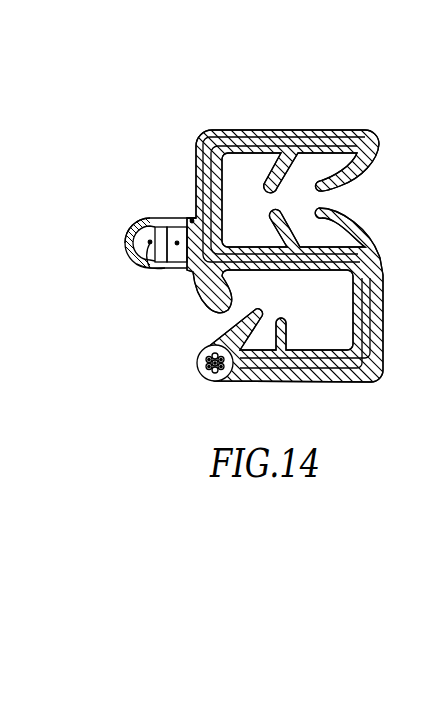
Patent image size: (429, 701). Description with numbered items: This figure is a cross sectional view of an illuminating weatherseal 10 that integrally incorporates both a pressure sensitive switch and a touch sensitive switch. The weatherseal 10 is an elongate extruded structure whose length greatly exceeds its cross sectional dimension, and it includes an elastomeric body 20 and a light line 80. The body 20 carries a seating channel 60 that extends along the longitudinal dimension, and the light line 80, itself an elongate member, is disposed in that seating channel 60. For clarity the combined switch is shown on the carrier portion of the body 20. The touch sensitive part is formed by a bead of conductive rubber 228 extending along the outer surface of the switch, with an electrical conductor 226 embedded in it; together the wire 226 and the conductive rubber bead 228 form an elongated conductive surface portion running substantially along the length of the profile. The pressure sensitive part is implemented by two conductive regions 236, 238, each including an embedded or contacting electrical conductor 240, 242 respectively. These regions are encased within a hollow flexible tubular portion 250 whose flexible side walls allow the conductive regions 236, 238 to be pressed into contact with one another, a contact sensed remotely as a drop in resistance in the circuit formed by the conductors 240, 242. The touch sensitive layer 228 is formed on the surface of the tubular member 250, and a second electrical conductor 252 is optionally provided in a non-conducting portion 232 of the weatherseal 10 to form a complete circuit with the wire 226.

The weatherseal 10 is at (326, 116).
The body 20 is at (196, 149).
The seating channel 60 is at (207, 383).
The light line 80 is at (198, 364).
The electrical conductor 226 is at (126, 241).
The conductive rubber bead 228 is at (126, 257).
The non-conducting portion 232 is at (221, 231).
The conductive region 236 is at (182, 264).
The conductive region 238 is at (146, 268).
The electrical conductor 240 is at (150, 242).
The electrical conductor 242 is at (136, 223).
The hollow flexible tubular portion 250 is at (158, 265).
The second electrical conductor 252 is at (192, 221).